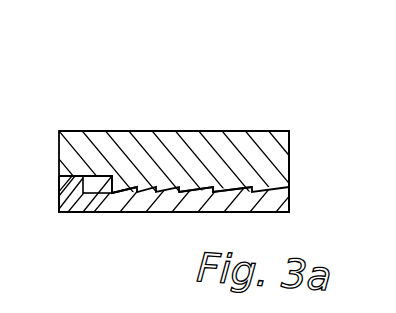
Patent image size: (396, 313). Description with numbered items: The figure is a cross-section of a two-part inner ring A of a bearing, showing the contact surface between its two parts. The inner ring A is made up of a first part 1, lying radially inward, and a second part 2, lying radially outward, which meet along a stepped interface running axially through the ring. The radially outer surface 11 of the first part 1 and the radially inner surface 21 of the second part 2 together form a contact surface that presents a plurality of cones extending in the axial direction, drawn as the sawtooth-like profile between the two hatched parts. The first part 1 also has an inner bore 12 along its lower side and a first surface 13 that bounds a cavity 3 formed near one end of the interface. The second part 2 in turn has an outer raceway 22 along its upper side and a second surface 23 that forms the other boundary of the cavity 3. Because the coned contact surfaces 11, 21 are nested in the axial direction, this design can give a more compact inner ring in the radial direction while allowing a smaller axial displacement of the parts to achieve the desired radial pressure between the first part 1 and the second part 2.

The two-part inner ring A is at (67, 129).
The first part 1 is at (289, 200).
The second part 2 is at (289, 157).
The cavity 3 is at (93, 194).
The radially outer surface 11 is at (206, 191).
The inner bore 12 is at (268, 203).
The first surface 13 is at (84, 190).
The radially inner surface 21 is at (210, 187).
The outer raceway 22 is at (131, 132).
The second surface 23 is at (122, 197).